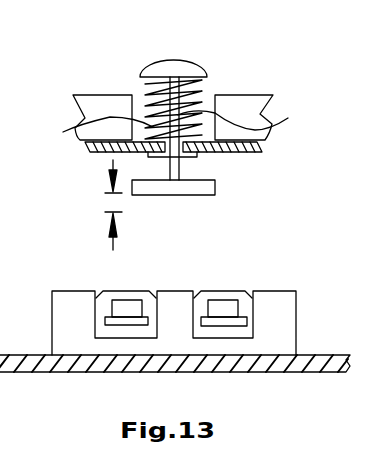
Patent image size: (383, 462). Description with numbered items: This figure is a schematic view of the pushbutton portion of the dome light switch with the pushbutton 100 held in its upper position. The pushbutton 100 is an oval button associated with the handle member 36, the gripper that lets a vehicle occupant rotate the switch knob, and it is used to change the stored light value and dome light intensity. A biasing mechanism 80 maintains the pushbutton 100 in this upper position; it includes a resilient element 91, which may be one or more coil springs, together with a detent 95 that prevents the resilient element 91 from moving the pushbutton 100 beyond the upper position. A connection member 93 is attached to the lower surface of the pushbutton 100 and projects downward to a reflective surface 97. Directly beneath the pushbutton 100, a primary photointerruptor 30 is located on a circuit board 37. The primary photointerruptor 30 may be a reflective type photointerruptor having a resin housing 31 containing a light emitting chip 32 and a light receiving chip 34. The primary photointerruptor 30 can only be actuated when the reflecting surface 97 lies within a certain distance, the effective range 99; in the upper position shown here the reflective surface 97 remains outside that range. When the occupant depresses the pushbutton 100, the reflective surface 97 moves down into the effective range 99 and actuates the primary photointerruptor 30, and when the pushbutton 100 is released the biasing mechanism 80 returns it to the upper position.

The biasing mechanism 80 is at (122, 46).
The pushbutton 100 is at (185, 60).
The handle member 36 is at (103, 108).
The resilient element 91 is at (95, 134).
The connection member 93 is at (248, 119).
The detent 95 is at (195, 155).
The reflective surface 97 is at (192, 195).
The effective range 99 is at (112, 218).
The primary photointerruptor 30 is at (202, 318).
The resin housing 31 is at (280, 328).
The light emitting chip 32 is at (137, 319).
The light receiving chip 34 is at (235, 320).
The circuit board 37 is at (318, 372).